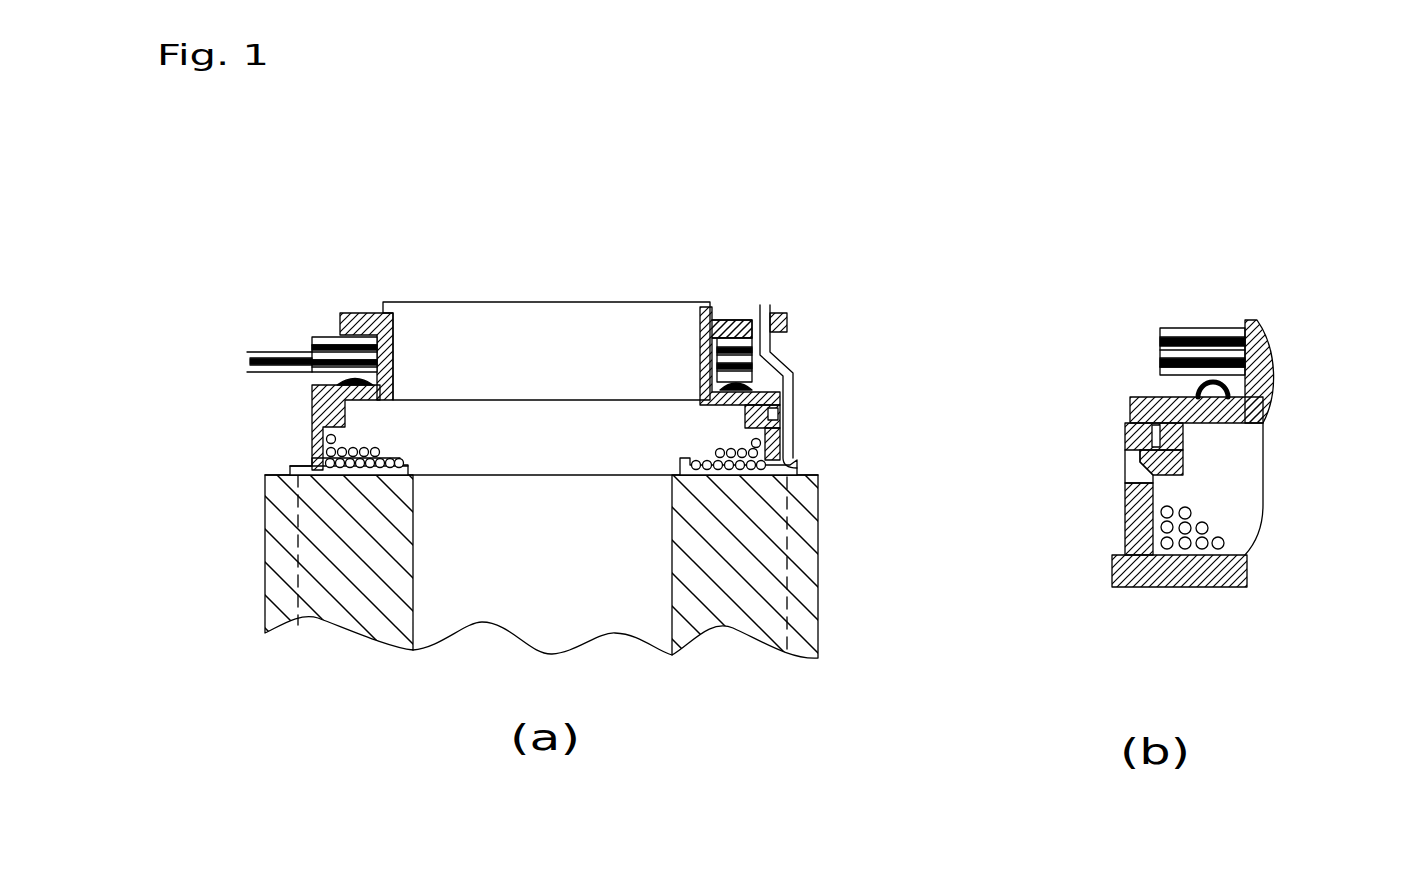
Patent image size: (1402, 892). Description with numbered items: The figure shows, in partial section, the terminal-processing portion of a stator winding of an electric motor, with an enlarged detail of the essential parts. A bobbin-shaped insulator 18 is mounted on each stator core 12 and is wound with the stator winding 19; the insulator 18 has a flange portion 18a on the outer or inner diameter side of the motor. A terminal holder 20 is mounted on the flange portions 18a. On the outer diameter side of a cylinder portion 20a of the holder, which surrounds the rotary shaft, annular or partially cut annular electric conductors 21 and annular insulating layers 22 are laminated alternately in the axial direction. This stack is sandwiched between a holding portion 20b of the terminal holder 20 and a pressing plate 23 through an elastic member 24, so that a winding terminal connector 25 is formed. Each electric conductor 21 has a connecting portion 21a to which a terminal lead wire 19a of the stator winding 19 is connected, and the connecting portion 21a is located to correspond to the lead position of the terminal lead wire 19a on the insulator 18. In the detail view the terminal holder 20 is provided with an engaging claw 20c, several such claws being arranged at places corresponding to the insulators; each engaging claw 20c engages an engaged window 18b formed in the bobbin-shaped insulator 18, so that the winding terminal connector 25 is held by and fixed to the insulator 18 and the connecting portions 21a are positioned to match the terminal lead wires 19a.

The stator core 12 is at (750, 577).
The bobbin-shaped insulator 18 is at (793, 462).
The flange portion 18a is at (780, 428).
The engaged window 18b is at (1127, 463).
The stator winding 19 is at (747, 477).
The terminal lead wire 19a is at (783, 370).
The terminal holder 20 is at (690, 397).
The cylinder portion 20a is at (703, 305).
The holding portion 20b is at (327, 378).
The engaging claw 20c is at (1130, 453).
The electric conductor 21 is at (313, 350).
The connecting portion 21a is at (790, 317).
The annular insulating layer 22 is at (736, 317).
The pressing plate 23 is at (362, 313).
The elastic member 24 is at (368, 402).
The winding terminal connector 25 is at (452, 300).